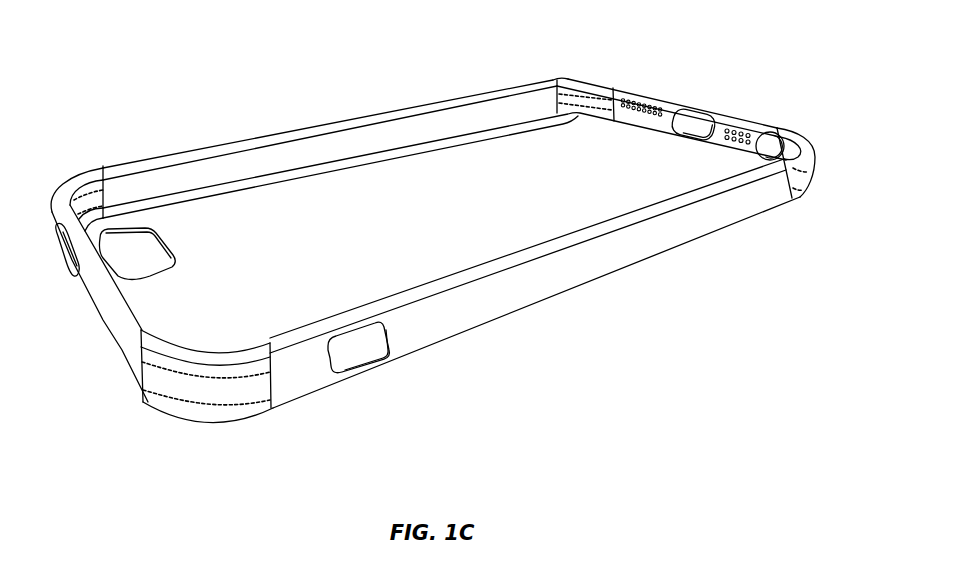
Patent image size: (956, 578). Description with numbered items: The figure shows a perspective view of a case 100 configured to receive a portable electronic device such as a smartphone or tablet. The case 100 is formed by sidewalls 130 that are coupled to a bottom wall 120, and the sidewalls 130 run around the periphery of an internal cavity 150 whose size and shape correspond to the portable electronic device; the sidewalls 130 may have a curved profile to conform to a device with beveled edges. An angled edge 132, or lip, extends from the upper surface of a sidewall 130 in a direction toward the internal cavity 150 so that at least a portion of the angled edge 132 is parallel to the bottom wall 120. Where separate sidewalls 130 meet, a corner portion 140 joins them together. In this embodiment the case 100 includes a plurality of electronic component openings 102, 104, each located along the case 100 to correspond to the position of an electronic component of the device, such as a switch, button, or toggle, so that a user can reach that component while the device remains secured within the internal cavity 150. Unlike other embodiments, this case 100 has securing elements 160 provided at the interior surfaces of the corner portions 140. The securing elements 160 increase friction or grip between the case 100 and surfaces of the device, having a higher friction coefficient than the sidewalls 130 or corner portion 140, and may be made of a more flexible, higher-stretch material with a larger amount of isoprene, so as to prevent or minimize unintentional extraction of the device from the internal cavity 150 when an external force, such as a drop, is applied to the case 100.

The case 100 is at (248, 112).
The electronic component opening 102 is at (390, 358).
The electronic component opening 104 is at (708, 114).
The bottom wall 120 is at (425, 222).
The sidewall 130 is at (520, 290).
The angled edge 132 is at (176, 163).
The corner portion 140 is at (152, 403).
The internal cavity 150 is at (519, 170).
The securing element 160 is at (218, 405).